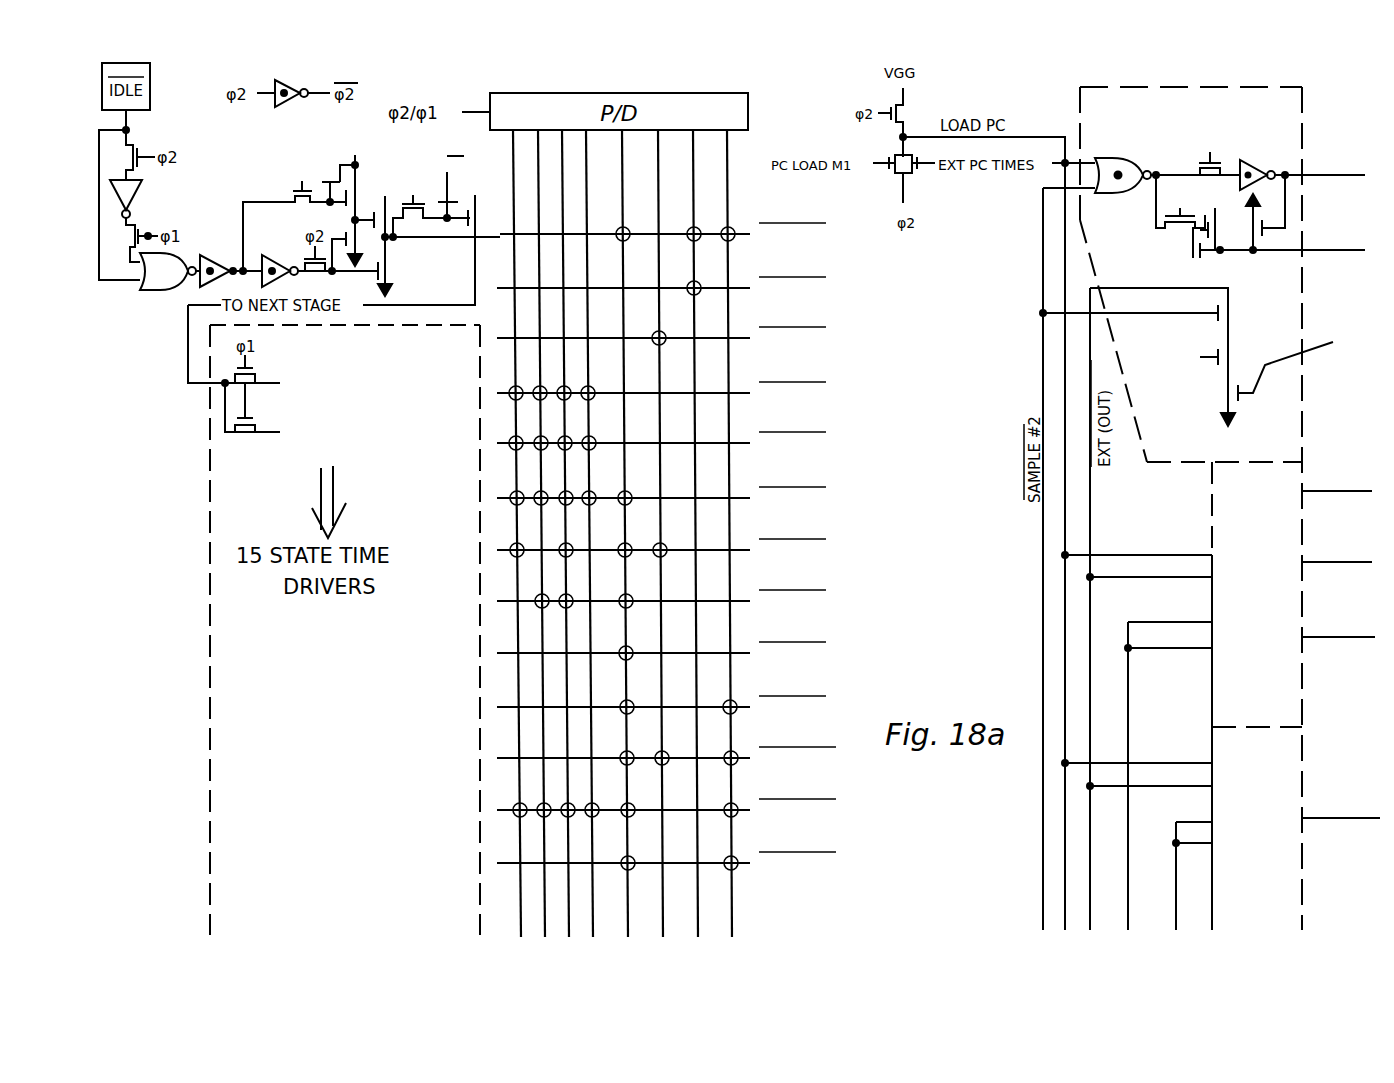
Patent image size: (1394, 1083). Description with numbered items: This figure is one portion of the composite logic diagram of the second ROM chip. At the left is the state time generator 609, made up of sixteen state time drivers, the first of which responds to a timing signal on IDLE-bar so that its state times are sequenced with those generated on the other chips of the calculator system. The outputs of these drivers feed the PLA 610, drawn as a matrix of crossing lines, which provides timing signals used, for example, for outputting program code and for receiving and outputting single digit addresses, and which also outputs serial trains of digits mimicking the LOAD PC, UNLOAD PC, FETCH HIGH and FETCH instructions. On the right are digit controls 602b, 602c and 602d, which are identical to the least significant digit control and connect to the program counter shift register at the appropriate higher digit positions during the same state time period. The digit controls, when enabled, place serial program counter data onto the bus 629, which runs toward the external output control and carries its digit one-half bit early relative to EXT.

The state time generator 609 is at (456, 282).
The PLA 610 is at (792, 212).
The digit control 602b is at (1192, 132).
The digit control 602c is at (1288, 635).
The digit control 602d is at (1288, 812).
The bus 629 is at (1090, 523).